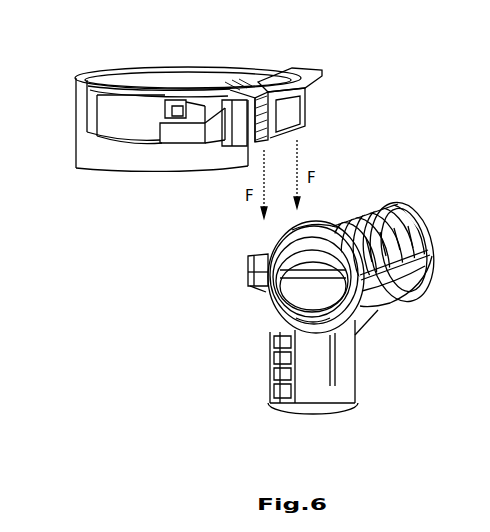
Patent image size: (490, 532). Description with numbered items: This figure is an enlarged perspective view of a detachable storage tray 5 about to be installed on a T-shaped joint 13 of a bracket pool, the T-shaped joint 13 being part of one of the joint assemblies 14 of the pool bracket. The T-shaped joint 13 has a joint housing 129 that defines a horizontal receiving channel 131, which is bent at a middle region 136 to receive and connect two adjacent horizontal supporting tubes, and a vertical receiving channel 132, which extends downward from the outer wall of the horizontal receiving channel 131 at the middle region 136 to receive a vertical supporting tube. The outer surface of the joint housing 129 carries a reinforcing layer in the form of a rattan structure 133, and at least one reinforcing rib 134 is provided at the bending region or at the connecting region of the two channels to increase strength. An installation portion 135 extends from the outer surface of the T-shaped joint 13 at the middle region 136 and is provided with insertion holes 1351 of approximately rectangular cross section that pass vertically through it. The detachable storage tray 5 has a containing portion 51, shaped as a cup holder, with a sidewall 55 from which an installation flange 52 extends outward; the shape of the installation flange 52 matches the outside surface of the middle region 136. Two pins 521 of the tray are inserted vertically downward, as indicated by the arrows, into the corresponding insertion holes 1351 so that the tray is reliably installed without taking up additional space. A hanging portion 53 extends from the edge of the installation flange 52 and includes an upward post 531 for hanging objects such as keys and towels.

The detachable storage tray 5 is at (133, 166).
The containing portion 51 is at (155, 80).
The installation flange 52 is at (262, 82).
The hanging portion 53 is at (187, 140).
The sidewall 55 is at (76, 93).
The upward post 531 is at (178, 115).
The pin 521 is at (262, 138).
The T-shaped joint 13 is at (296, 308).
The joint assembly 14 is at (416, 216).
The joint housing 129 is at (343, 393).
The horizontal receiving channel 131 is at (395, 284).
The vertical receiving channel 132 is at (318, 400).
The rattan structure 133 is at (396, 232).
The reinforcing rib 134 is at (375, 275).
The installation portion 135 is at (257, 285).
The middle region 136 is at (321, 226).
The insertion hole 1351 is at (260, 268).